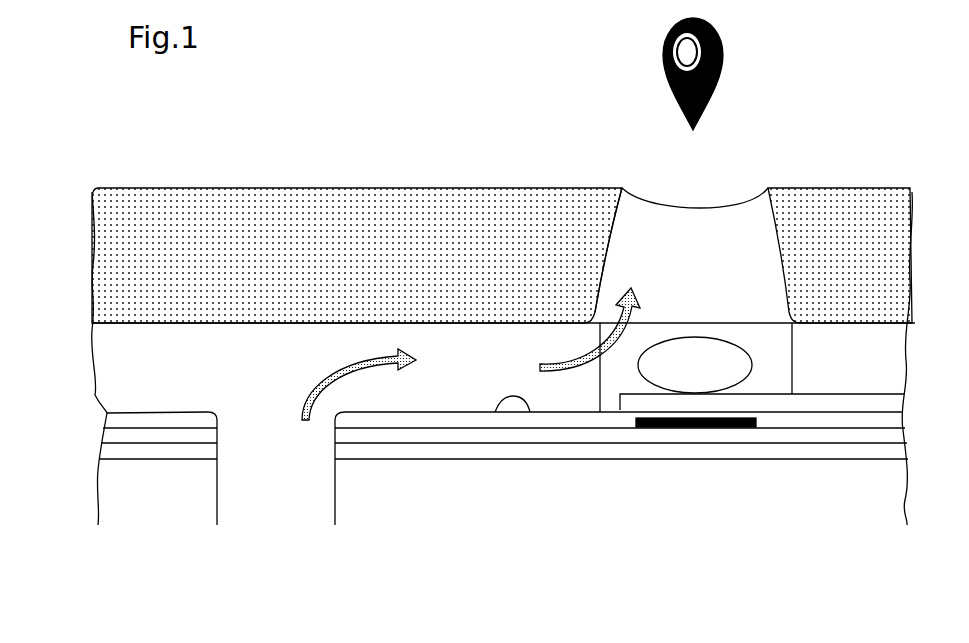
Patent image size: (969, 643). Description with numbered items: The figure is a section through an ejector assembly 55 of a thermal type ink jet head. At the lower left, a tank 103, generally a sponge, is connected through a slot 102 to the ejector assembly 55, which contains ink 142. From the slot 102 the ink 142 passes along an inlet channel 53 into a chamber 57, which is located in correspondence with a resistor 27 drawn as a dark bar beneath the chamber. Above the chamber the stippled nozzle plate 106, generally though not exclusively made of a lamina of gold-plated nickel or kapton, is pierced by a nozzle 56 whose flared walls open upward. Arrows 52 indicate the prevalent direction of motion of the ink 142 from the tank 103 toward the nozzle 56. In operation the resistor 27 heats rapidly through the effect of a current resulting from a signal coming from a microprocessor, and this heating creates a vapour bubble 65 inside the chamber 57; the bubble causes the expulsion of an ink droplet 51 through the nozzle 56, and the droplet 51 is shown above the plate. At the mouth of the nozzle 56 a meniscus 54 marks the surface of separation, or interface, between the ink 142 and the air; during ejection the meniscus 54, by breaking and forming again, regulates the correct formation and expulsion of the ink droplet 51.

The droplet 51 is at (725, 66).
The meniscus 54 is at (715, 205).
The nozzle 56 is at (615, 258).
The nozzle plate 106 is at (403, 187).
The ejector assembly 55 is at (65, 197).
The arrows 52 is at (335, 372).
The vapour bubble 65 is at (740, 370).
The chamber 57 is at (602, 378).
The inlet channel 53 is at (530, 412).
The resistor 27 is at (693, 427).
The ink 142 is at (326, 476).
The slot 102 is at (218, 493).
The tank 103 is at (246, 580).